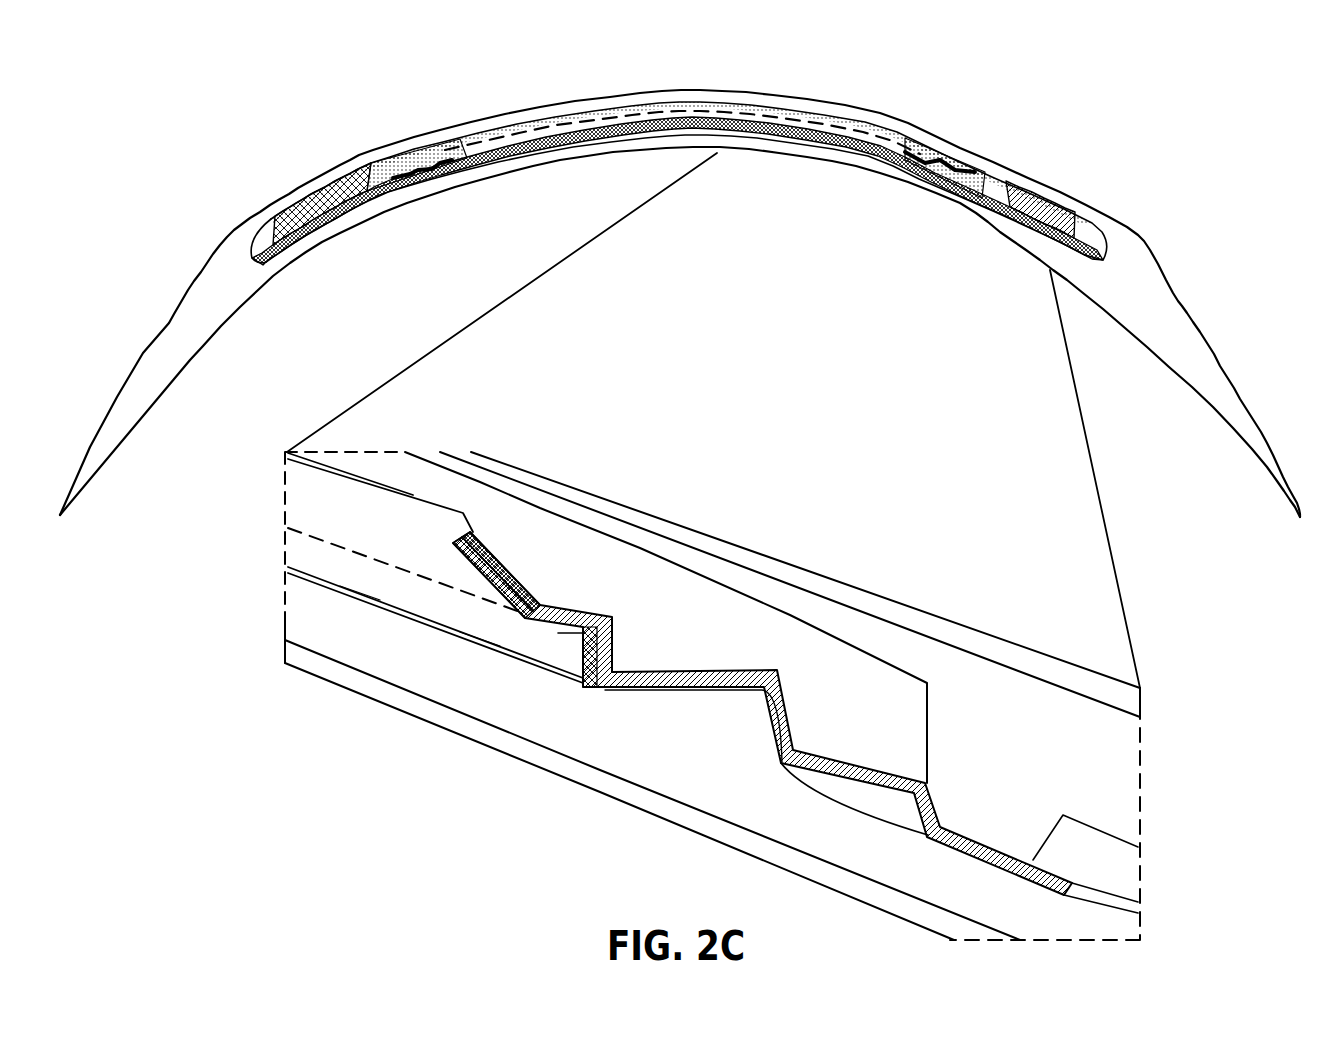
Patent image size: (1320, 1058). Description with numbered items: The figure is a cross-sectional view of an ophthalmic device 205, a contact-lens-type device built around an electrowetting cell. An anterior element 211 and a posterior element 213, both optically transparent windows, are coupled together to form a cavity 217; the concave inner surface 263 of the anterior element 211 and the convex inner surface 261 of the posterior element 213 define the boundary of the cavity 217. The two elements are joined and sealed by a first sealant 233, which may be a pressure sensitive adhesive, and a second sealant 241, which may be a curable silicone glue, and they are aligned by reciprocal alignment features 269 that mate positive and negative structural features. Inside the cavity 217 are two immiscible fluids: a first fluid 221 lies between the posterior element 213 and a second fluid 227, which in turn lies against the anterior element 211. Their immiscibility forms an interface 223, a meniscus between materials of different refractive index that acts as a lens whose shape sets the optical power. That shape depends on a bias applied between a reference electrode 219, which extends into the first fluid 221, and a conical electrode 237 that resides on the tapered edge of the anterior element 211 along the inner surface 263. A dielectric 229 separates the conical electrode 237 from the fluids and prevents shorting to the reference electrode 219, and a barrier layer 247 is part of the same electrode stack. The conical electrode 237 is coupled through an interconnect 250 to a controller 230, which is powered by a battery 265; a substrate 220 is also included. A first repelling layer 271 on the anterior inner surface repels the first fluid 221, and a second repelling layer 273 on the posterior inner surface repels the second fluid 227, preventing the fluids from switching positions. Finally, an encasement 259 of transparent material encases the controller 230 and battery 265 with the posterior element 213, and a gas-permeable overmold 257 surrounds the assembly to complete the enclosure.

The ophthalmic device 205 is at (78, 62).
The anterior element 211 is at (432, 157).
The posterior element 213 is at (598, 137).
The cavity 217 is at (282, 458).
The reference electrode 219 is at (432, 175).
The substrate 220 is at (1103, 897).
The first fluid 221 is at (768, 128).
The interface 223 is at (632, 114).
The second fluid 227 is at (882, 150).
The dielectric 229 is at (557, 632).
The controller 230 is at (1037, 217).
The first sealant 233 is at (700, 690).
The conical electrode 237 is at (512, 563).
The second sealant 241 is at (872, 797).
The barrier layer 247 is at (533, 590).
The interconnect 250 is at (778, 703).
The overmold 257 is at (1007, 173).
The encasement 259 is at (1050, 210).
The inner surface of posterior element 261 is at (362, 603).
The inner surface of anterior element 263 is at (377, 474).
The battery 265 is at (313, 217).
The reciprocal alignment features 269 is at (985, 193).
The first repelling layer 271 is at (413, 497).
The second repelling layer 273 is at (480, 642).